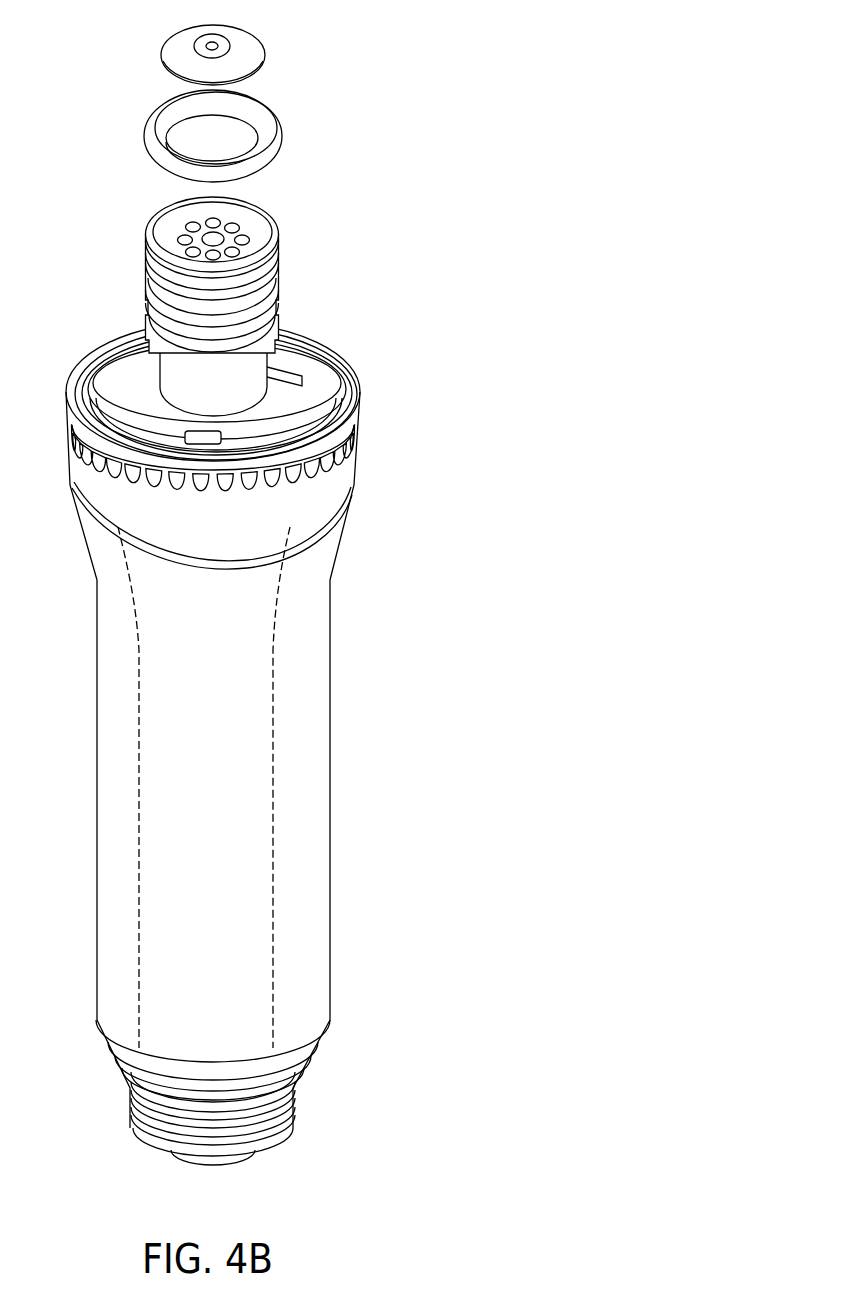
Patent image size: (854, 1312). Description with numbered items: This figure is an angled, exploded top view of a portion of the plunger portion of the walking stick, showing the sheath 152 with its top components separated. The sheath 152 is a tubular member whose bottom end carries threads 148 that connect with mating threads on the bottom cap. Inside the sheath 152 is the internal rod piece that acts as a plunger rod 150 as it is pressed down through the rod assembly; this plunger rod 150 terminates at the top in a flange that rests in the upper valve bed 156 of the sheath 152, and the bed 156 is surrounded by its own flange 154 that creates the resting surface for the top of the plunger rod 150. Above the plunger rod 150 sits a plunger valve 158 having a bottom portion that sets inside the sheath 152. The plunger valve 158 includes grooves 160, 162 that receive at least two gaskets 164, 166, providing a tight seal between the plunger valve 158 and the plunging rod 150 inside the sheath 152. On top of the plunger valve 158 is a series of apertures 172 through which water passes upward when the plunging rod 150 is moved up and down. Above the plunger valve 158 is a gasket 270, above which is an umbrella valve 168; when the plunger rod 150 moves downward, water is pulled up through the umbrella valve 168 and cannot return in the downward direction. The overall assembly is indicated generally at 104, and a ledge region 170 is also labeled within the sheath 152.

The filter cartridge 104 is at (472, 76).
The threads 148 is at (313, 1063).
The plunger rod 150 is at (140, 790).
The sheath 152 is at (312, 778).
The flange 154 is at (333, 498).
The upper valve bed 156 is at (307, 412).
The plunger valve 158 is at (277, 302).
The groove 160 is at (152, 291).
The groove 162 is at (152, 315).
The gasket 164 is at (277, 285).
The gasket 166 is at (277, 318).
The umbrella valve 168 is at (250, 58).
The ledge 170 is at (290, 438).
The apertures 172 is at (186, 225).
The gasket 270 is at (268, 128).